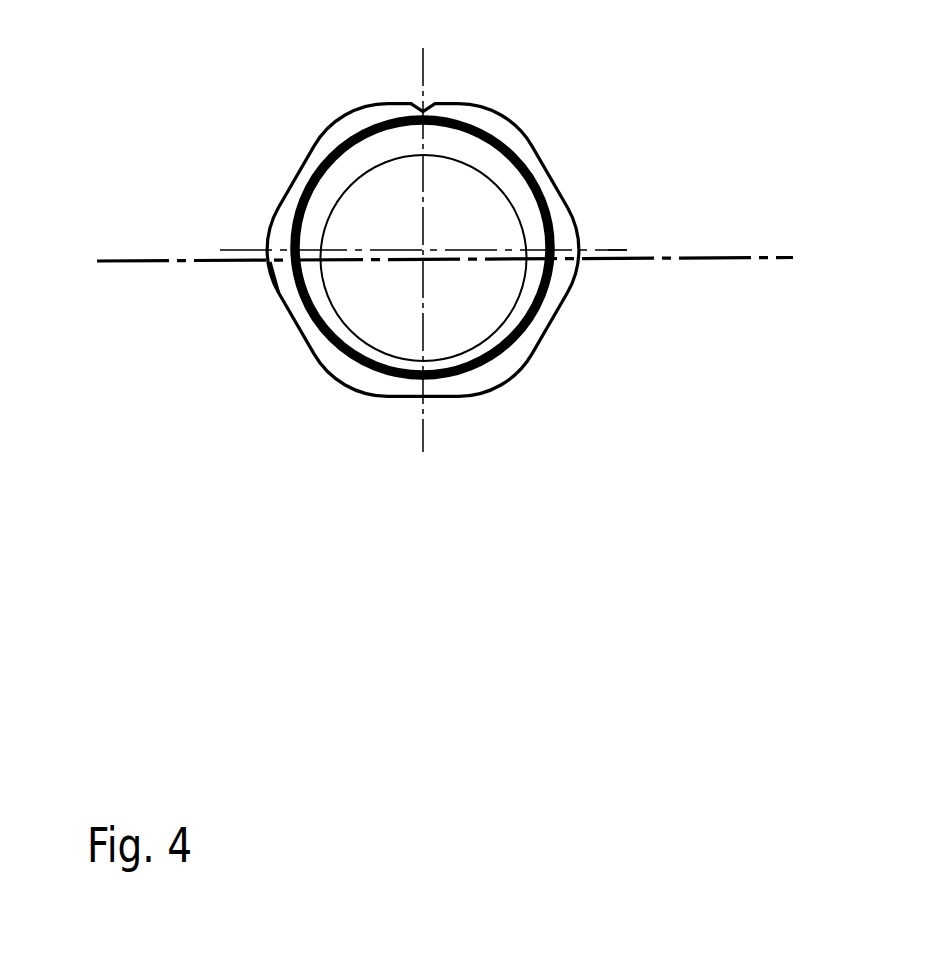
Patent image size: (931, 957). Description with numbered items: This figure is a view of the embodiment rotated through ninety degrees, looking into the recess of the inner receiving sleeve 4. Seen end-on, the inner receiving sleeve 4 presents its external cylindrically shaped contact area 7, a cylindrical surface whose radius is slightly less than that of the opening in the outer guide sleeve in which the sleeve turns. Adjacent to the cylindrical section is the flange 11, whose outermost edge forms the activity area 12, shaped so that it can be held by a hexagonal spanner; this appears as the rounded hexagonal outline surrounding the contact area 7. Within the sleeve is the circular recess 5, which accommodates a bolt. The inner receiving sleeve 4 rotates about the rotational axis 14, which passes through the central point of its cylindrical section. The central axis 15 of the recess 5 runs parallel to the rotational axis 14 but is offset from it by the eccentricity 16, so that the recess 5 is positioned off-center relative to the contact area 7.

The inner receiving sleeve 4 is at (682, 358).
The circular recess 5 is at (477, 202).
The external cylindrically shaped contact area 7 is at (372, 372).
The flange 11 is at (280, 278).
The activity area 12 is at (288, 170).
The rotational axis 14 is at (236, 246).
The central axis 15 is at (155, 257).
The eccentricity 16 is at (627, 252).